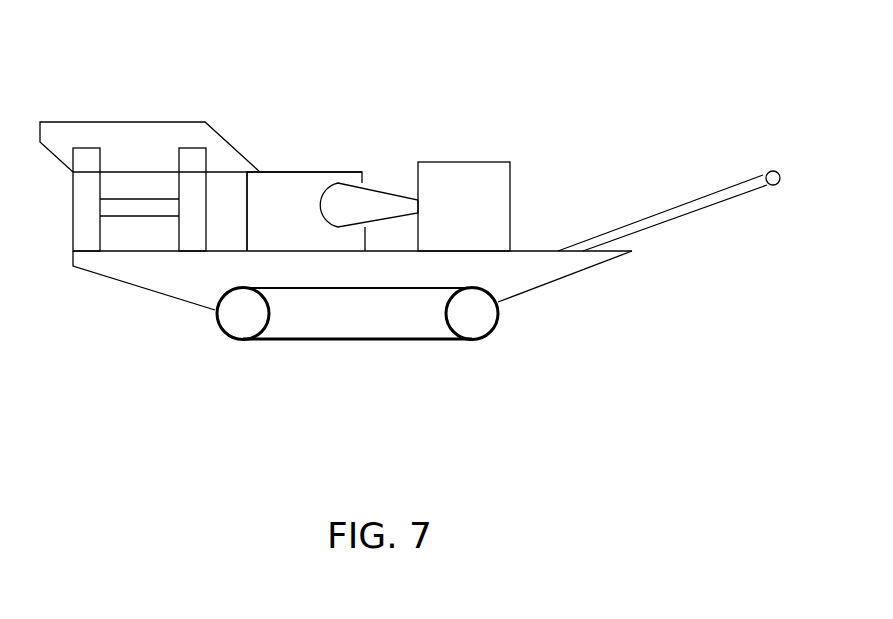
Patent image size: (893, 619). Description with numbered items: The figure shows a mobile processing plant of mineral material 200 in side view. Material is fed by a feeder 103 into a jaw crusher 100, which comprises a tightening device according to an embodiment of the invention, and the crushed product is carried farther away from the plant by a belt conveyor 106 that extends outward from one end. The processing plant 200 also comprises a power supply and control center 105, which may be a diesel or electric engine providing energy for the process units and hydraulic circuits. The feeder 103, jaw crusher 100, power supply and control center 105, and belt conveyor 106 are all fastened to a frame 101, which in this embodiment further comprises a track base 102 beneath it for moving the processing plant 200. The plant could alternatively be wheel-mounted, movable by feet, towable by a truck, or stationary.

The mobile processing plant of mineral material 200 is at (410, 207).
The jaw crusher 100 is at (290, 187).
The frame 101 is at (162, 278).
The track base 102 is at (238, 340).
The feeder 103 is at (125, 128).
The power supply and control center 105 is at (445, 178).
The belt conveyor 106 is at (670, 218).